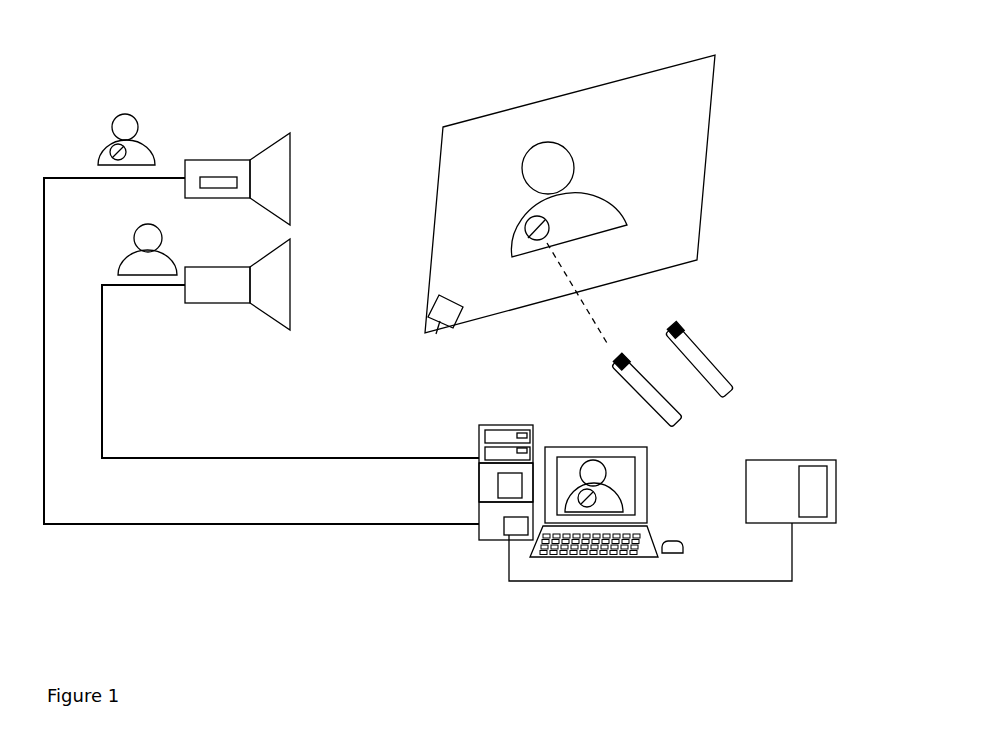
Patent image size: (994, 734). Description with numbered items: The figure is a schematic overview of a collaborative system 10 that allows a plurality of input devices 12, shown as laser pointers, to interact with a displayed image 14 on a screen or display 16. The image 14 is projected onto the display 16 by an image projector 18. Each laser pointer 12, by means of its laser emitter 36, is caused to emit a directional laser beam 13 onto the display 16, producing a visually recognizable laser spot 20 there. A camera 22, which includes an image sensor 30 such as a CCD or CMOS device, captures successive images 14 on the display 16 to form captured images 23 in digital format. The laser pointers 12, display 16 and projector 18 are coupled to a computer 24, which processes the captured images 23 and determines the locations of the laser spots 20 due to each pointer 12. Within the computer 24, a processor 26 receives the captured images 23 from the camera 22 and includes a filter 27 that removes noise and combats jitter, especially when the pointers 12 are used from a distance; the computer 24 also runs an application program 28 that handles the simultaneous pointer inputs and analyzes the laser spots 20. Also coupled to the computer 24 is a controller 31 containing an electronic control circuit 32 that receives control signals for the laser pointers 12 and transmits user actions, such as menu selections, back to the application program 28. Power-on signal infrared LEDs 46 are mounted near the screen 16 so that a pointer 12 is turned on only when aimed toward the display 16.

The system 10 is at (556, 668).
The input device 12 is at (705, 350).
The laser beam 13 is at (595, 325).
The displayed image 14 is at (620, 202).
The display 16 is at (545, 100).
The image projector 18 is at (217, 303).
The laser spot 20 is at (512, 232).
The camera 22 is at (217, 160).
The captured image 23 is at (97, 163).
The computer 24 is at (480, 425).
The processor 26 is at (497, 478).
The filter 27 is at (497, 490).
The application program 28 is at (503, 533).
The image sensor 30 is at (218, 177).
The controller 31 is at (815, 523).
The electronic control circuit 32 is at (829, 490).
The laser emitter 36 is at (612, 360).
The power-on signal infrared LED 46 is at (427, 334).